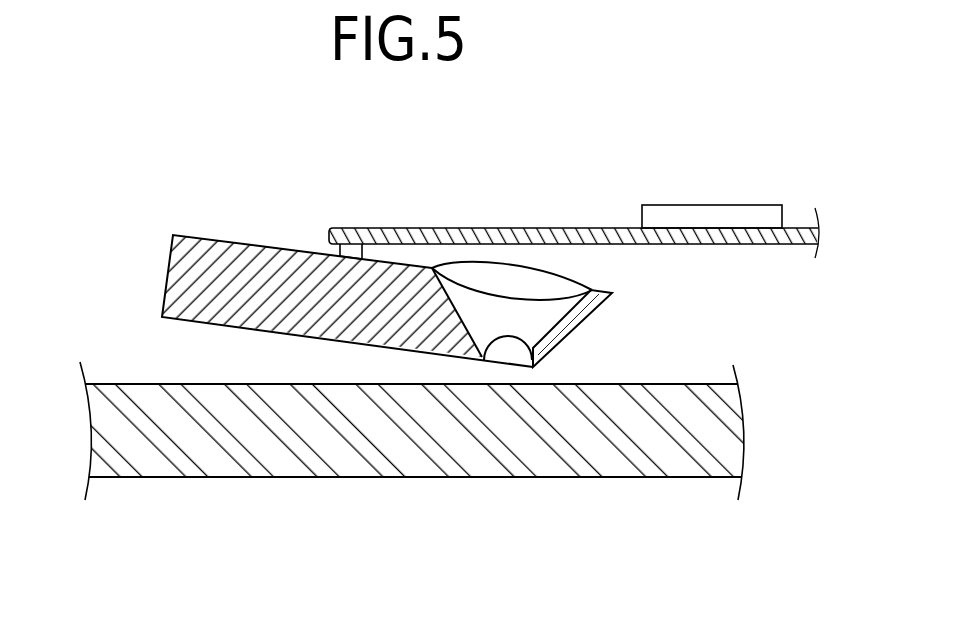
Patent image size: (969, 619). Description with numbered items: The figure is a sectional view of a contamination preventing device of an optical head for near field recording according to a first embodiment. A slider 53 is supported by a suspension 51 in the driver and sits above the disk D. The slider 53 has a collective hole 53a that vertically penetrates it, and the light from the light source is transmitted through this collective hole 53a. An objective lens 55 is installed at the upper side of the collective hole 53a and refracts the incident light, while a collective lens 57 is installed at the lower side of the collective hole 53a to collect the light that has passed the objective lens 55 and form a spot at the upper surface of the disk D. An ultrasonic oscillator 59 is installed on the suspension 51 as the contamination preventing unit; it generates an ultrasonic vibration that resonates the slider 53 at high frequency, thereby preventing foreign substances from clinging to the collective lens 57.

The suspension 51 is at (403, 234).
The slider 53 is at (282, 262).
The collective hole 53a is at (560, 313).
The objective lens 55 is at (560, 282).
The collective lens 57 is at (549, 334).
The ultrasonic oscillator 59 is at (703, 212).
The disk D is at (677, 450).